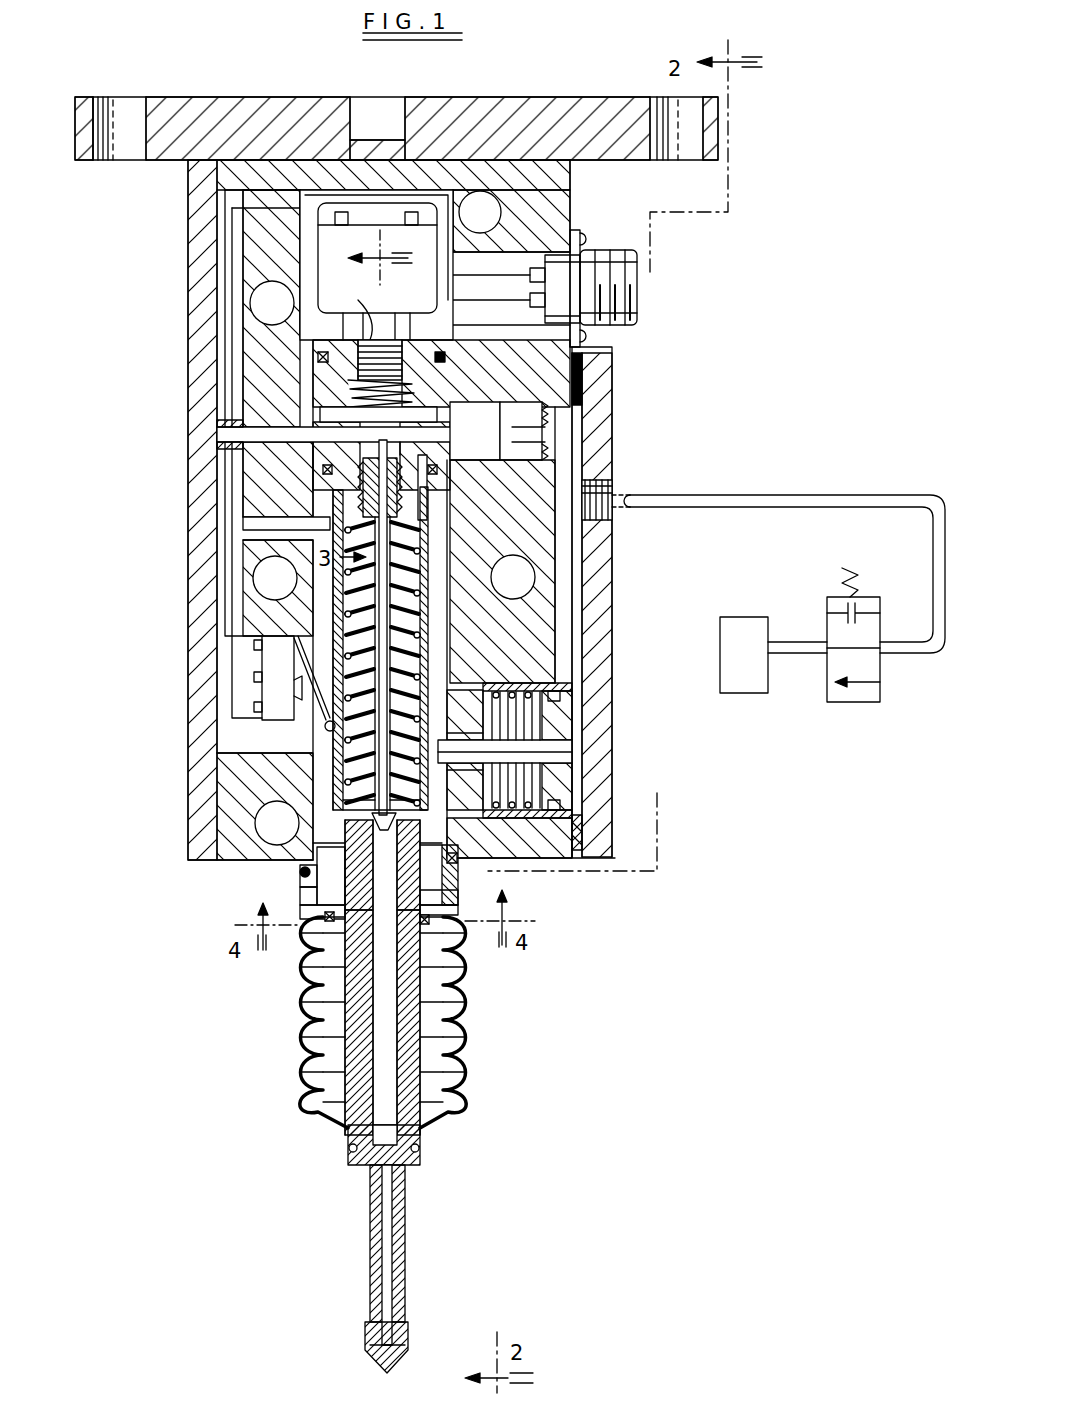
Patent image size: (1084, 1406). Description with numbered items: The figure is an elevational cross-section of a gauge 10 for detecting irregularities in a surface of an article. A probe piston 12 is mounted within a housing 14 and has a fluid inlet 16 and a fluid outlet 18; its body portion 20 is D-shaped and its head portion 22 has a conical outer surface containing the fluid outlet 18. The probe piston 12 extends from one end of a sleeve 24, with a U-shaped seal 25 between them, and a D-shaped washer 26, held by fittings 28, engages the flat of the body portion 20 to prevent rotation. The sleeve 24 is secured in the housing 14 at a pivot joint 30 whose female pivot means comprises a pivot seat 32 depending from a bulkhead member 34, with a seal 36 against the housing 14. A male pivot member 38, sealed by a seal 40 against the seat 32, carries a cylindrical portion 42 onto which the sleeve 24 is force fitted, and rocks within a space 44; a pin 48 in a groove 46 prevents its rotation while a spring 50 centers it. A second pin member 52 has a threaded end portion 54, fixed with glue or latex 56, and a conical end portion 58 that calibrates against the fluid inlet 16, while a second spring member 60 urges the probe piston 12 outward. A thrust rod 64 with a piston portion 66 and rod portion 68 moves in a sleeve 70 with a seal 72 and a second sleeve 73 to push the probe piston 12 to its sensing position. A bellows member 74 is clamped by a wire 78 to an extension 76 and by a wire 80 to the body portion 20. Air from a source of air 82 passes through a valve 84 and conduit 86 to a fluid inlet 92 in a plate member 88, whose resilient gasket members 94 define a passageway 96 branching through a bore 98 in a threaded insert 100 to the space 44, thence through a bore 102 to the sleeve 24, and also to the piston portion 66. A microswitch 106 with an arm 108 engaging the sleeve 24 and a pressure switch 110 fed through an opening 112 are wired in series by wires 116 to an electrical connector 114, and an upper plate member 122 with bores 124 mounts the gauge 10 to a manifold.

The gauge 10 is at (188, 322).
The probe piston 12 is at (352, 1050).
The housing 14 is at (250, 555).
The fluid inlet 16 is at (430, 790).
The fluid outlet 18 is at (367, 1340).
The body portion 20 is at (420, 1012).
The head portion 22 is at (400, 1340).
The sleeve 24 is at (428, 662).
The seal 25 is at (345, 840).
The D-shaped washer 26 is at (455, 925).
The fittings 28 is at (322, 965).
The pivot joint 30 is at (448, 362).
The pivot seat 32 is at (447, 500).
The bulkhead member 34 is at (310, 380).
The seal 36 is at (318, 357).
The male pivot member 38 is at (362, 485).
The seal 40 is at (435, 462).
The cylindrical portion 42 is at (330, 522).
The space 44 is at (323, 465).
The groove 46 is at (412, 395).
The pin 48 is at (217, 442).
The spring 50 is at (410, 346).
The second pin member 52 is at (393, 615).
The first threaded end portion 54 is at (427, 515).
The glue or latex 56 is at (340, 420).
The second conical end portion 58 is at (458, 900).
The second spring member 60 is at (396, 820).
The thrust rod 64 is at (510, 732).
The piston portion 66 is at (562, 718).
The rod portion 68 is at (560, 750).
The sleeve 70 is at (585, 838).
The seal 72 is at (560, 690).
The second sleeve 73 is at (470, 730).
The bellows member 74 is at (455, 1077).
The extension 76 is at (312, 905).
The wire 78 is at (460, 878).
The wire 80 is at (420, 1152).
The source of air 82 is at (750, 690).
The valve 84 is at (862, 704).
The conduit 86 is at (752, 500).
The plate member 88 is at (612, 418).
The fluid inlet 92 is at (612, 490).
The resilient gasket members 94 is at (612, 375).
The passageway 96 is at (577, 545).
The bore 98 is at (548, 432).
The threaded insert 100 is at (582, 392).
The bore 102 is at (475, 431).
The microswitch 106 is at (270, 689).
The arm 108 is at (320, 730).
The pressure switch 110 is at (420, 297).
The opening 112 is at (349, 308).
The electrical connector 114 is at (625, 290).
The wires 116 is at (225, 357).
The upper plate member 122 is at (300, 97).
The bores 124 is at (118, 97).